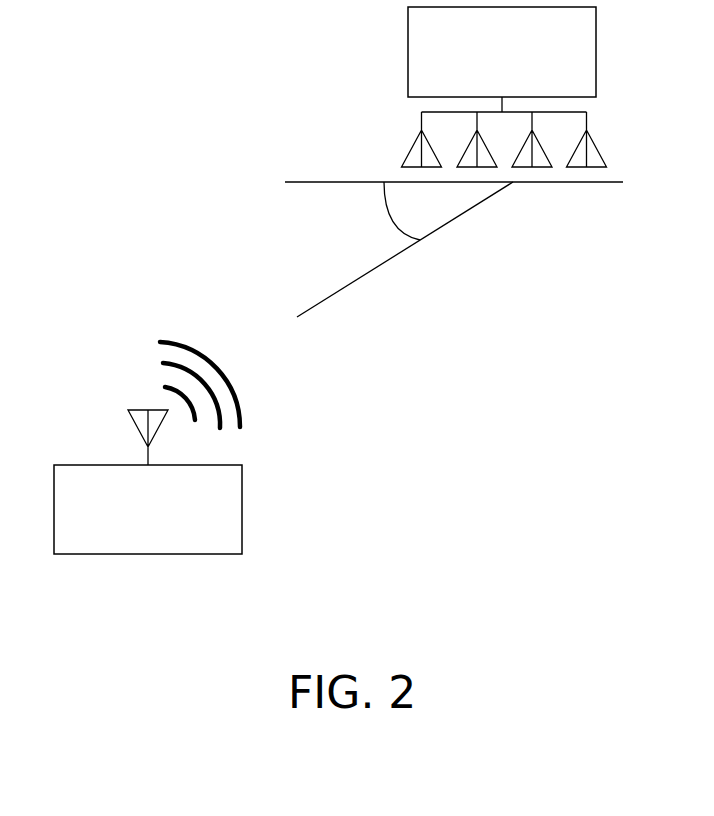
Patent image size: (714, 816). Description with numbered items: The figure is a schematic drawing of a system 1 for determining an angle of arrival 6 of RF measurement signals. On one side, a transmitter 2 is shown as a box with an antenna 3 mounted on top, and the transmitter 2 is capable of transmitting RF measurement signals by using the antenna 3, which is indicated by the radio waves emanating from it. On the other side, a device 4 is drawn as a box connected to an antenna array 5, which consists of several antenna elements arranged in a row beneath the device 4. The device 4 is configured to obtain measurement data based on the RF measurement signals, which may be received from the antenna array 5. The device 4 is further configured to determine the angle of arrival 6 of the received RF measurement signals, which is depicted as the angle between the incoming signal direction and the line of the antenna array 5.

The system 1 is at (196, 69).
The transmitter 2 is at (242, 507).
The antenna 3 is at (131, 423).
The device 4 is at (596, 45).
The antenna array 5 is at (587, 113).
The angle of arrival 6 is at (445, 210).